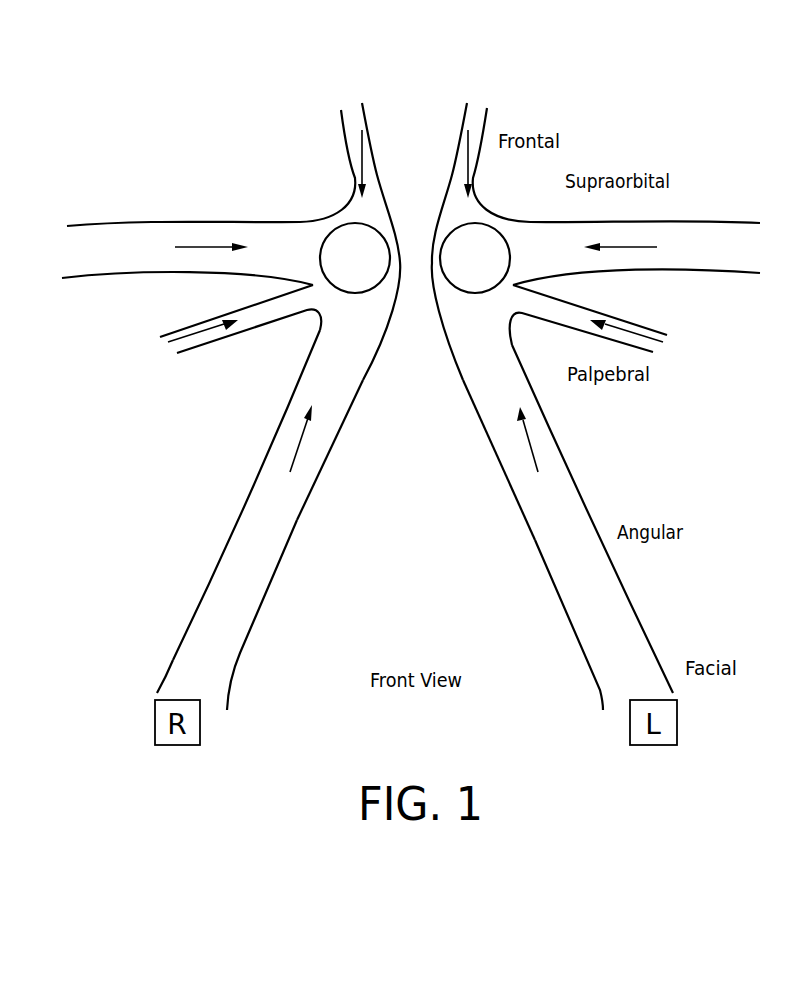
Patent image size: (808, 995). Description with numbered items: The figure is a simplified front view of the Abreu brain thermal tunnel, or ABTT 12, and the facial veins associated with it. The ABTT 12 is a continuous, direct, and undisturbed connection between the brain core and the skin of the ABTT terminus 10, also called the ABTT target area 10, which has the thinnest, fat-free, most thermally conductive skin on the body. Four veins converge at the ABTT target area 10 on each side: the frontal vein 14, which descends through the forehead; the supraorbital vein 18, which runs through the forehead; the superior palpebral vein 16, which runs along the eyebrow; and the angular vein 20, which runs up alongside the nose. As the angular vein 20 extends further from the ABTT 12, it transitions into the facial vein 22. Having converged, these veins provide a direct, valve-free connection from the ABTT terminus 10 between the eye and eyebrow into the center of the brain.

The ABTT terminus 10 is at (444, 294).
The Abreu brain thermal tunnel 12 is at (465, 238).
The frontal vein 14 is at (350, 124).
The superior palpebral vein 16 is at (183, 333).
The supraorbital vein 18 is at (140, 232).
The angular vein 20 is at (257, 500).
The facial vein 22 is at (208, 683).